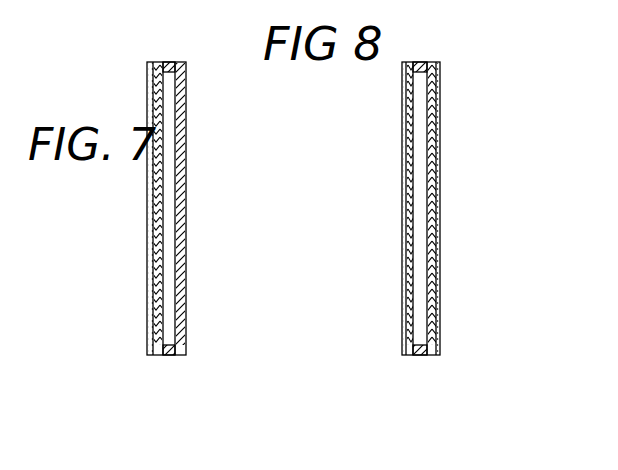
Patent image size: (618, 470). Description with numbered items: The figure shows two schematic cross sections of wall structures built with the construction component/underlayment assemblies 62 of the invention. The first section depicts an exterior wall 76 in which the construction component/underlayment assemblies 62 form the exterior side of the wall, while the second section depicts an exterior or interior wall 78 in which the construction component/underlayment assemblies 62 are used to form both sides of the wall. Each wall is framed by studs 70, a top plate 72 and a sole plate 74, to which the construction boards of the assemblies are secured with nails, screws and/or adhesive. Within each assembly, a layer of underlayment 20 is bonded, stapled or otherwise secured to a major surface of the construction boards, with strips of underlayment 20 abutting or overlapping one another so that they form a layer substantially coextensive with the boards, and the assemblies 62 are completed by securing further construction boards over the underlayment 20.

In FIG. 7, the underlayment 20 is at (147, 200).
In FIG. 8, the underlayment 20 is at (402, 214).
In FIG. 7, the construction component/underlayment assembly 62 is at (146, 272).
In FIG. 8, the construction component/underlayment assembly 62 is at (394, 278).
In FIG. 7, the studs 70 is at (173, 231).
In FIG. 8, the studs 70 is at (413, 162).
In FIG. 7, the top plate 72 is at (176, 62).
In FIG. 8, the top plate 72 is at (424, 62).
In FIG. 7, the sole plate 74 is at (172, 357).
In FIG. 8, the sole plate 74 is at (421, 357).
In FIG. 7, the exterior wall 76 is at (170, 218).
In FIG. 8, the exterior or interior wall 78 is at (419, 207).